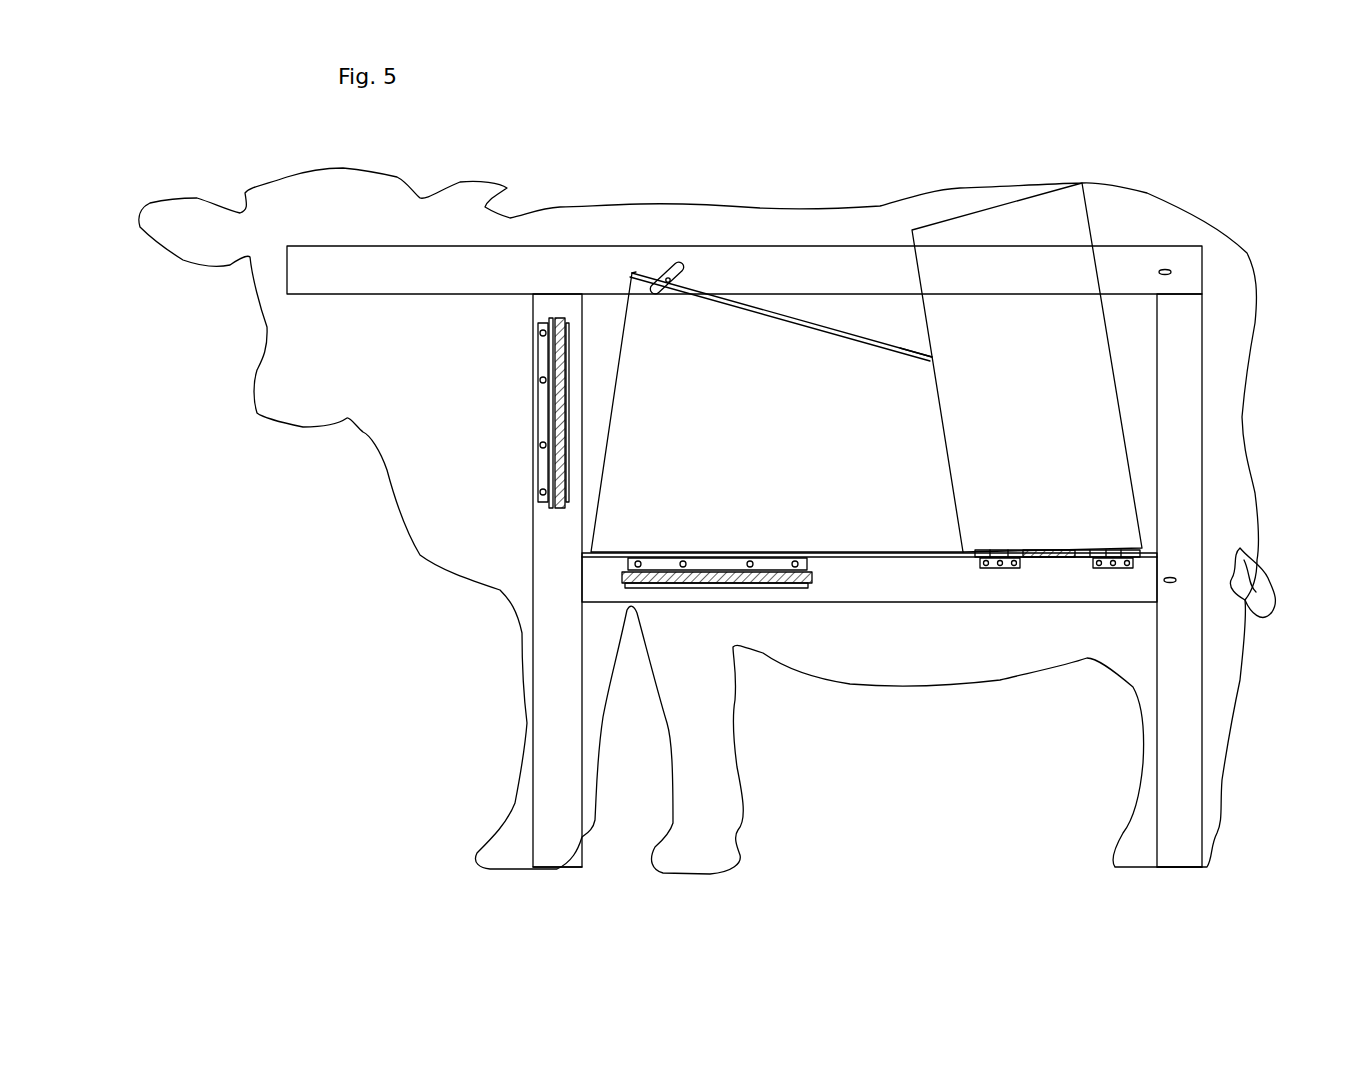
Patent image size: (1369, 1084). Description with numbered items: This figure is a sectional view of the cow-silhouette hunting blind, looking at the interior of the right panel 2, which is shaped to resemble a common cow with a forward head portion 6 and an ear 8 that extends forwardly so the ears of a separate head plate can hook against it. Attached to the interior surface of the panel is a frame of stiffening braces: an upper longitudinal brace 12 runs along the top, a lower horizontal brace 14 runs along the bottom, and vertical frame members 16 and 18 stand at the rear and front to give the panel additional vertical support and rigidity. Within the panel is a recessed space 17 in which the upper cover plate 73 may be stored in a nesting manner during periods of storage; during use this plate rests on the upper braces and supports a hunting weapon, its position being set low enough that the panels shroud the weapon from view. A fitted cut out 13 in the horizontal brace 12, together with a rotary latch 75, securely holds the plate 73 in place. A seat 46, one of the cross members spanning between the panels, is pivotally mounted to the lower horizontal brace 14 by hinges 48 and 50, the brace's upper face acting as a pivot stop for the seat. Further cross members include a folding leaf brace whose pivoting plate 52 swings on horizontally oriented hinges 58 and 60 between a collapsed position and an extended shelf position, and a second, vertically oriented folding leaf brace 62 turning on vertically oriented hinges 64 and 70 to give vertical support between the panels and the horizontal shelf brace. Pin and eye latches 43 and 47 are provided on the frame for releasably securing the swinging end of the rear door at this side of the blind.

The right panel 2 is at (840, 226).
The forward head portion 6 is at (305, 350).
The ear 8 is at (178, 216).
The brace 12 is at (760, 268).
The fitted cut out 13 is at (652, 282).
The lower horizontal brace 14 is at (910, 585).
The vertical frame member 16 is at (1170, 338).
The recessed space 17 is at (904, 335).
The brace 18 is at (560, 698).
The pin and eye latch 43 is at (1167, 270).
The seat 46 is at (977, 297).
The pin and eye latch 47 is at (1172, 583).
The hinge 48 is at (1110, 568).
The hinge 50 is at (1000, 568).
The pivoting plate 52 is at (542, 460).
The hinge 58 is at (750, 585).
The hinge 60 is at (805, 575).
The folding leaf brace 62 is at (683, 588).
The hinge 64 is at (570, 342).
The hinge 70 is at (542, 406).
The upper cover plate 73 is at (795, 370).
The rotary latch 75 is at (687, 263).